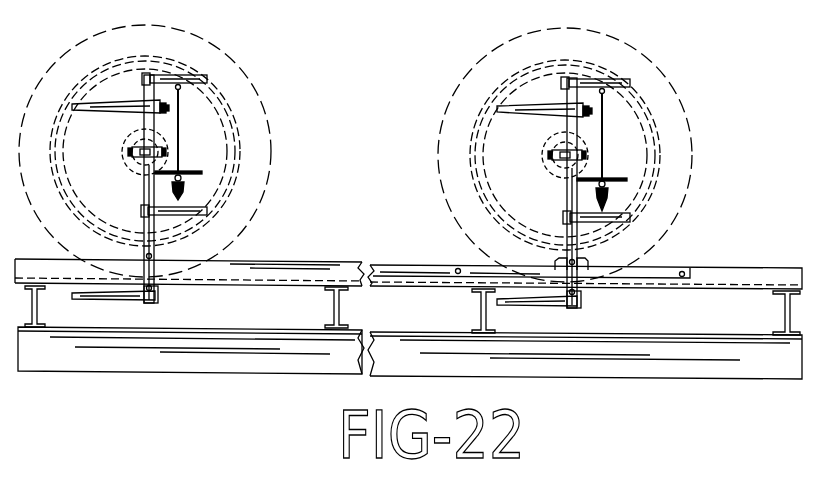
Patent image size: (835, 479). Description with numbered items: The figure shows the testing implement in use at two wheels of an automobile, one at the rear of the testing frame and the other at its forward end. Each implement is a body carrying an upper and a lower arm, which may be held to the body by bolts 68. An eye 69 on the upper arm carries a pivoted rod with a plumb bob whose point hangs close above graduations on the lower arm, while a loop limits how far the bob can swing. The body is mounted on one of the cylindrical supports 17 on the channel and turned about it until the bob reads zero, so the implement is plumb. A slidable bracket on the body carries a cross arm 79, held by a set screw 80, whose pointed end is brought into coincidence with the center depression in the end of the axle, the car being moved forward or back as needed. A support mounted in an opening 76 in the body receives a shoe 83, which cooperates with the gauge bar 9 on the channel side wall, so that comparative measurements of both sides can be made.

The gauge bars 9 is at (655, 272).
The supports 17 is at (158, 289).
The bolts 68 is at (562, 83).
The eye 69 is at (181, 89).
The opening 76 is at (152, 256).
The cross arm 79 is at (142, 158).
The set screw 80 is at (130, 153).
The shoe 83 is at (589, 264).